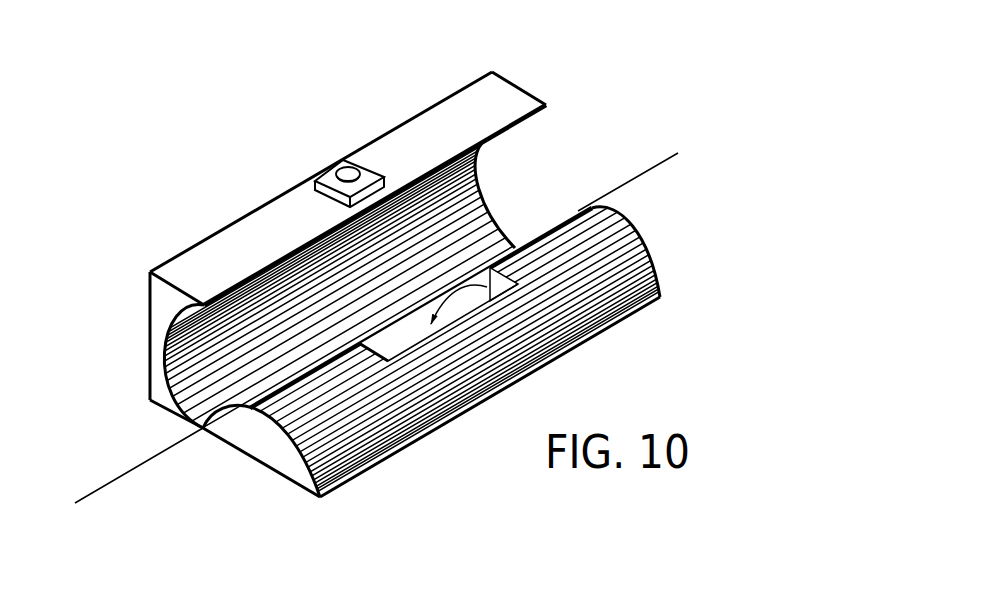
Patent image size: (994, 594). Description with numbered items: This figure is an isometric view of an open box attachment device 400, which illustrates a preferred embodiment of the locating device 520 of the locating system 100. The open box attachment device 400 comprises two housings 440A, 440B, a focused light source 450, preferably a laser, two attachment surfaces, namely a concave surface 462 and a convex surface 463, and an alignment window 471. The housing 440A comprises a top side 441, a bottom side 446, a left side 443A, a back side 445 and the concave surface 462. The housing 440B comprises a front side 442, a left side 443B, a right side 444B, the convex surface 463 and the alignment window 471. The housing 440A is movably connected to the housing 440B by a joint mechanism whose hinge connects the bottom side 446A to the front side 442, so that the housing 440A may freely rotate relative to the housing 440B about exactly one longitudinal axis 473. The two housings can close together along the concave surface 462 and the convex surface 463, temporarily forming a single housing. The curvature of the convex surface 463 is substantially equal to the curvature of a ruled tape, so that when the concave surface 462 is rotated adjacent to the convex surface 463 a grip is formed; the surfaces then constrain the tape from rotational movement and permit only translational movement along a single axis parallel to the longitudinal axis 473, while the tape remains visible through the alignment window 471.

The locating system 100 is at (232, 112).
The open box attachment device 400 is at (709, 172).
The housing 440A is at (160, 342).
The housing 440B is at (281, 476).
The top side 441 is at (221, 251).
The front side 442 is at (418, 442).
The left side 443A is at (154, 396).
The left side 443B is at (253, 437).
The right side 444B is at (665, 281).
The back side 445 is at (228, 217).
The bottom side 446 is at (176, 418).
The bottom side 446A is at (164, 408).
The focused light source 450 is at (345, 163).
The concave surface 462 is at (452, 238).
The convex surface 463 is at (553, 258).
The alignment window 471 is at (510, 279).
The longitudinal axis 473 is at (93, 494).
The locating device 520 is at (618, 90).